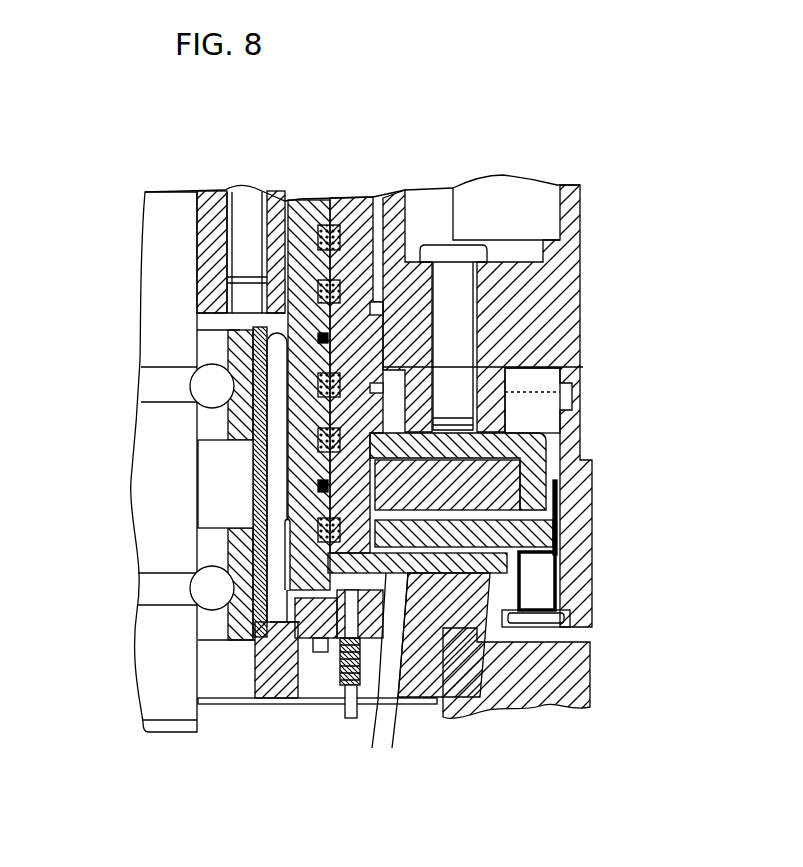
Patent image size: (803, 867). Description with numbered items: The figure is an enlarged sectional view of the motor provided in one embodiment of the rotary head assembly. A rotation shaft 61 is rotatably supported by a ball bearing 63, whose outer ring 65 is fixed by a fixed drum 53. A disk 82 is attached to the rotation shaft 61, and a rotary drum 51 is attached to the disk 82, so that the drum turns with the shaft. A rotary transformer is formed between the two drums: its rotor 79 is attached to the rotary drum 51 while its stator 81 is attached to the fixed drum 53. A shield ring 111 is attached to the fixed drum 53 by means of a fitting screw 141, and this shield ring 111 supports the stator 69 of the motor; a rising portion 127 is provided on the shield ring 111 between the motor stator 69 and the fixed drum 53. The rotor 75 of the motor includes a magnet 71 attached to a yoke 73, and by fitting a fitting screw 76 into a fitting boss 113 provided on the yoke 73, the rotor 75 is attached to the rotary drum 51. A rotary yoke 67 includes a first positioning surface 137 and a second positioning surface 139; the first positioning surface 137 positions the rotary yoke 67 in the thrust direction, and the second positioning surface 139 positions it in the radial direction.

The rotary drum 51 is at (573, 227).
The fixed drum 53 is at (593, 627).
The rotation shaft 61 is at (158, 208).
The ball bearing 63 is at (200, 445).
The outer ring 65 is at (243, 443).
The rotary yoke 67 is at (507, 700).
The stator 69 is at (394, 695).
The magnet 71 is at (515, 492).
The yoke 73 is at (582, 455).
The rotor 75 is at (532, 422).
The fitting screw 76 is at (472, 237).
The rotor 79 is at (348, 200).
The stator 81 is at (302, 200).
The disk 82 is at (207, 198).
The shield ring 111 is at (540, 590).
The fitting boss 113 is at (507, 392).
The rising portion 127 is at (557, 522).
The first positioning surface 137 is at (313, 655).
The second positioning surface 139 is at (386, 690).
The fitting screw 141 is at (582, 618).